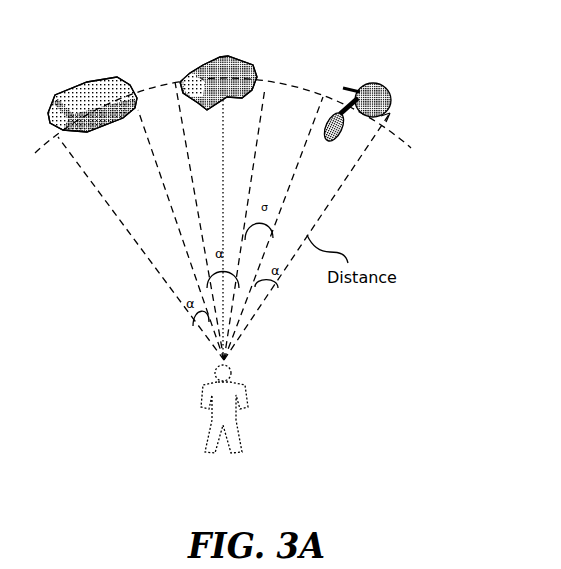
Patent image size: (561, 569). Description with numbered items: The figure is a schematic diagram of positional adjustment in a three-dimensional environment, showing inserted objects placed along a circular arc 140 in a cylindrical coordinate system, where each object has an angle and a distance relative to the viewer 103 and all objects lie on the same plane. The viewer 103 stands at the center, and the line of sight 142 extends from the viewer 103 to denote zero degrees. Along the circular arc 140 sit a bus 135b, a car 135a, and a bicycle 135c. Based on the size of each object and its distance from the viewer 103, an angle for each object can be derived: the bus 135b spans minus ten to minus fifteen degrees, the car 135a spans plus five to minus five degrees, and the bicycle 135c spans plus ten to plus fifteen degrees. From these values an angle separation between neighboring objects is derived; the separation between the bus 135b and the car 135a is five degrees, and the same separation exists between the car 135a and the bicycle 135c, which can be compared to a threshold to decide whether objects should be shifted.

The viewer 103 is at (247, 405).
The car 135a is at (248, 63).
The bus 135b is at (77, 88).
The bicycle 135c is at (377, 82).
The circular arc 140 is at (401, 125).
The line of sight 142 is at (223, 160).